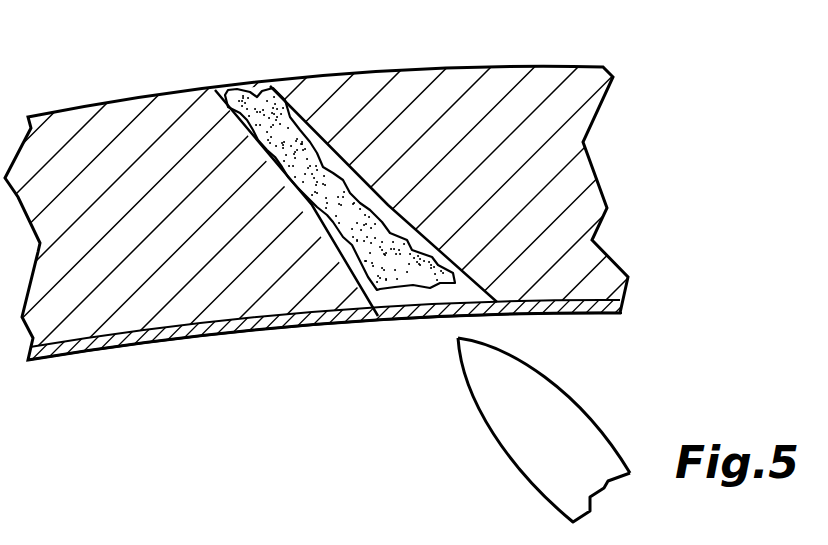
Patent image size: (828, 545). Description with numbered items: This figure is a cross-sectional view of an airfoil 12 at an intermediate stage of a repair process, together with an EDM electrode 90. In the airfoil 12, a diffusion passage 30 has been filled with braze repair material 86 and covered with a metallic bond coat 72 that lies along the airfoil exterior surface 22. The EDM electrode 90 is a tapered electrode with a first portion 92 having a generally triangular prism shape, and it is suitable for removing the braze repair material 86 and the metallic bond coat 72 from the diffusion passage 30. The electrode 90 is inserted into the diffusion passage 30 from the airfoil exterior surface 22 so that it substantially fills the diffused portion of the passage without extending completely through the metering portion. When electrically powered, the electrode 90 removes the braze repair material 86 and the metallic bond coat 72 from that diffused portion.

The airfoil 12 is at (527, 69).
The airfoil exterior surface 22 is at (100, 345).
The diffusion passage 30 is at (352, 186).
The metallic bond coat 72 is at (425, 312).
The braze repair material 86 is at (258, 98).
The EDM electrode 90 is at (550, 430).
The first portion 92 is at (522, 358).